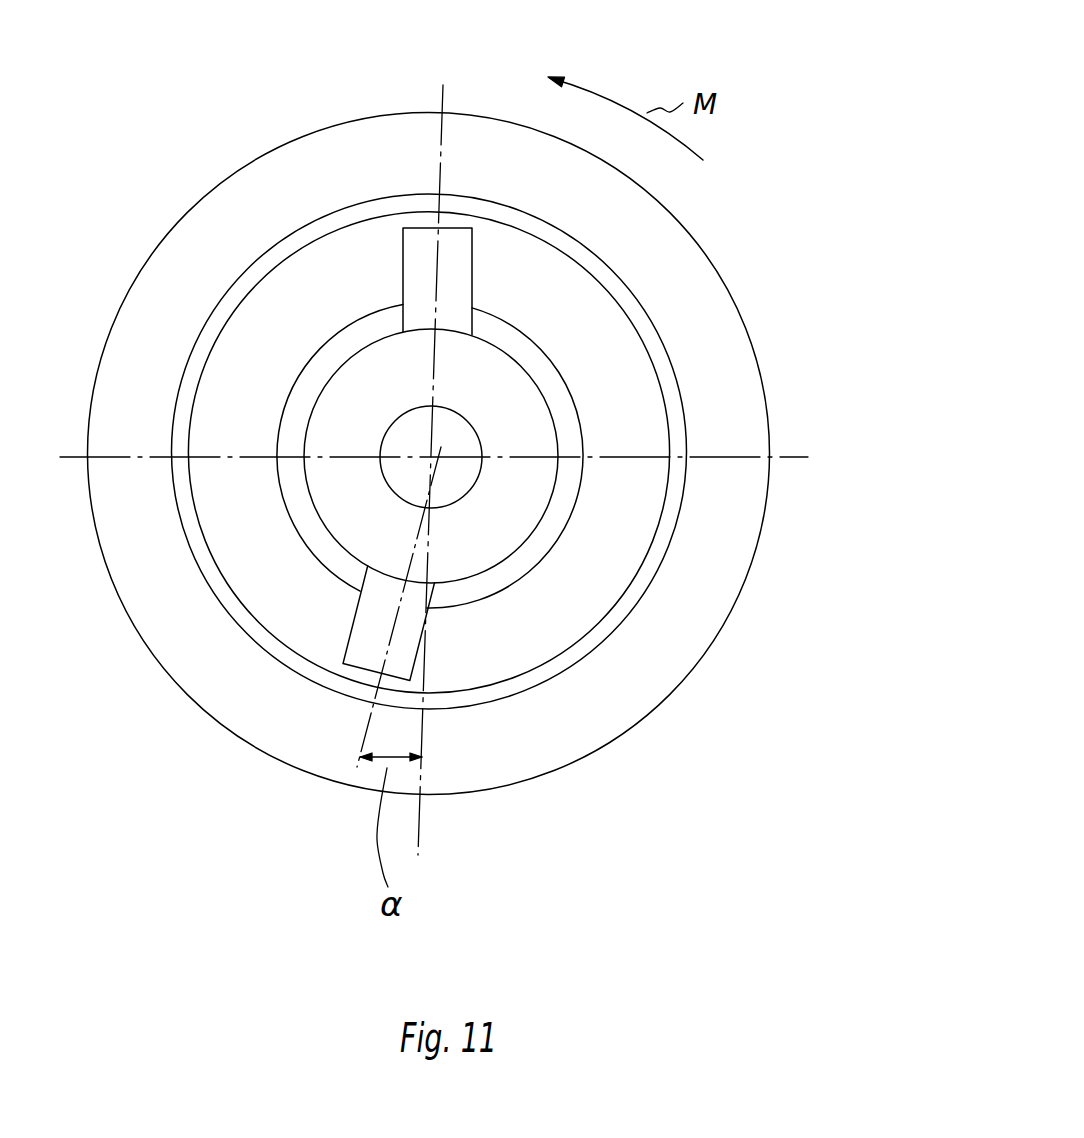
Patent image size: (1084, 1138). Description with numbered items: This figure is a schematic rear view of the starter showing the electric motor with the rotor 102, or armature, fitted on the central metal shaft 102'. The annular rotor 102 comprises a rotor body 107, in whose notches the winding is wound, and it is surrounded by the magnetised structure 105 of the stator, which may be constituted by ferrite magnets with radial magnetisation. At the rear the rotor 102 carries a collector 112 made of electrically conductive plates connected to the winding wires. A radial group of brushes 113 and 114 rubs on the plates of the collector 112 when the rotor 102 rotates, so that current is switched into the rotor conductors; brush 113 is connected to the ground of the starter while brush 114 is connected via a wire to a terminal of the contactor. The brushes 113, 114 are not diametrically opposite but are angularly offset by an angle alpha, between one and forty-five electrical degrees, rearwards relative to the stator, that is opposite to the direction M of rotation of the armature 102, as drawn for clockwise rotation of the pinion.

The rotor 102 is at (325, 532).
The metal shaft 102' is at (624, 498).
The magnetised structure 105 is at (702, 270).
The rotor body 107 is at (558, 620).
The collector 112 is at (527, 407).
The brush 113 is at (358, 640).
The brush 114 is at (403, 267).